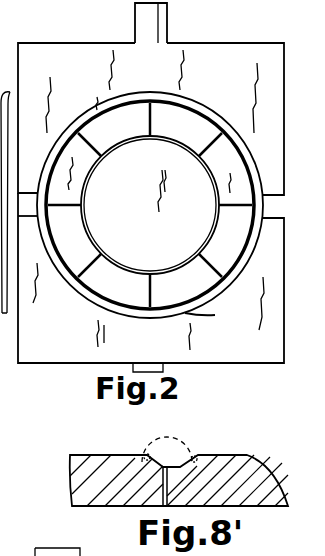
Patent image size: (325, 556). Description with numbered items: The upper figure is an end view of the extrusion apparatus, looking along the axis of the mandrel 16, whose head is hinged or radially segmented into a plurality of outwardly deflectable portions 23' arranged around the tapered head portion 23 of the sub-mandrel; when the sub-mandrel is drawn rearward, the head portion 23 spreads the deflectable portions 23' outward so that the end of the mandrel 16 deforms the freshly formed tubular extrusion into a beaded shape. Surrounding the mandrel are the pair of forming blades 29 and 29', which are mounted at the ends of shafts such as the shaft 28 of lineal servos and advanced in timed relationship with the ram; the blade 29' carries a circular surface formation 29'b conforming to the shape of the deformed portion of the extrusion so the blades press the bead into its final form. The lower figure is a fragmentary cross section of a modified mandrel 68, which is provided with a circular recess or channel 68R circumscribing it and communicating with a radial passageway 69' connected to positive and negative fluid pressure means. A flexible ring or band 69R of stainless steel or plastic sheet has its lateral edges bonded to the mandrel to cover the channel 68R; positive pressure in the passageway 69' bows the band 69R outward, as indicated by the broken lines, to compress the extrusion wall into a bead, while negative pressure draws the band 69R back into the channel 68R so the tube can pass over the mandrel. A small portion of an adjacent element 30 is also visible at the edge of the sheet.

In FIG. 2, the blade 29 is at (143, 102).
In FIG. 2, the blade 29' is at (147, 295).
In FIG. 2, the circular surface formation 29'b is at (214, 323).
In FIG. 2, the shaft 28 is at (165, 38).
In FIG. 2, the head portion 23 is at (150, 205).
In FIG. 2, the outwardly deflectable portions 23' is at (150, 197).
In FIG. 2, the mandrel 16 is at (97, 293).
In FIG. 8', the mandrel 68 is at (225, 465).
In FIG. 8', the circular recess or channel 68R is at (195, 455).
In FIG. 8', the flexible ring or band 69R is at (146, 452).
In FIG. 8', the radial passageway 69' is at (123, 504).
In FIG. 8', the adjacent element 30 is at (32, 547).